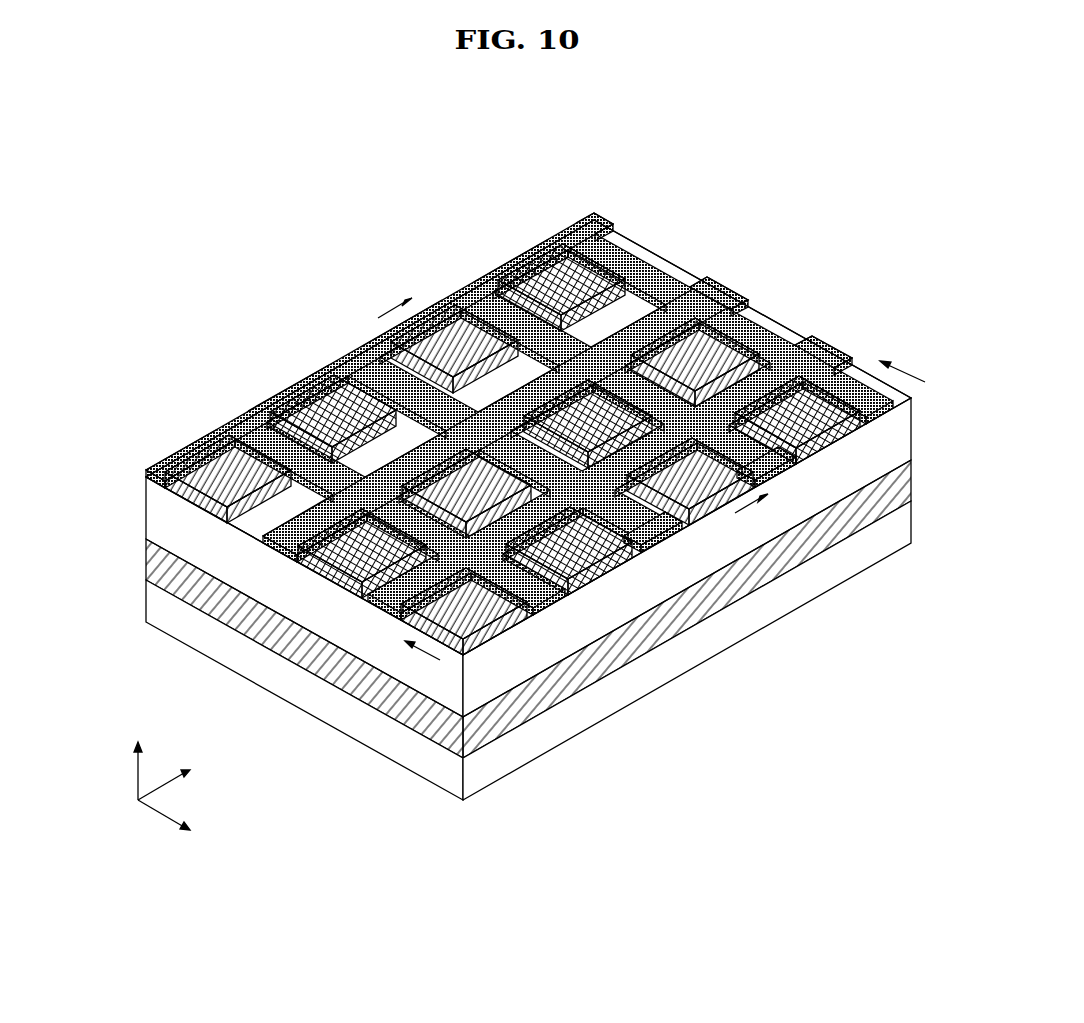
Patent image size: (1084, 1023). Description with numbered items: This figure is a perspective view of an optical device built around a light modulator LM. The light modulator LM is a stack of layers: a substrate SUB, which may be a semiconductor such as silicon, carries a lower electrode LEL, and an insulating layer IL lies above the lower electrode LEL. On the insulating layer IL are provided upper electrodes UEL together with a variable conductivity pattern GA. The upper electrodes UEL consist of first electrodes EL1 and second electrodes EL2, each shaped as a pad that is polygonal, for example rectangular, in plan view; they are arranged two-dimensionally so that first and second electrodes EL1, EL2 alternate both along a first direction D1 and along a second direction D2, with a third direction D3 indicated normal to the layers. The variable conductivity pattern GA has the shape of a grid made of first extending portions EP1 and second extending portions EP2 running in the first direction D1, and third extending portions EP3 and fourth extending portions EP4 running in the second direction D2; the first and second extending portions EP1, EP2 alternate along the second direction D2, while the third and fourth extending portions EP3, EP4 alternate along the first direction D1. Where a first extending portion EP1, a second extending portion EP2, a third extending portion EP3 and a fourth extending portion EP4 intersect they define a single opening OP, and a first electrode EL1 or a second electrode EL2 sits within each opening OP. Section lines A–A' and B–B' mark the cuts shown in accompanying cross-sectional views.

The light modulator LM is at (933, 144).
The upper electrodes UEL is at (481, 147).
The first electrode EL1 is at (462, 345).
The second electrode EL2 is at (538, 255).
The opening OP is at (637, 295).
The first extending portion EP1 is at (780, 473).
The second extending portion EP2 is at (650, 540).
The third extending portion EP3 is at (833, 343).
The fourth extending portion EP4 is at (723, 280).
The variable conductivity pattern GA is at (757, 186).
The insulating layer IL is at (152, 508).
The lower electrode LEL is at (152, 556).
The substrate SUB is at (153, 600).
The section line A is at (428, 659).
The section line A' is at (913, 379).
The section line B is at (385, 317).
The section line B' is at (743, 519).
The first direction D1 is at (183, 828).
The second direction D2 is at (183, 778).
The third direction D3 is at (136, 759).